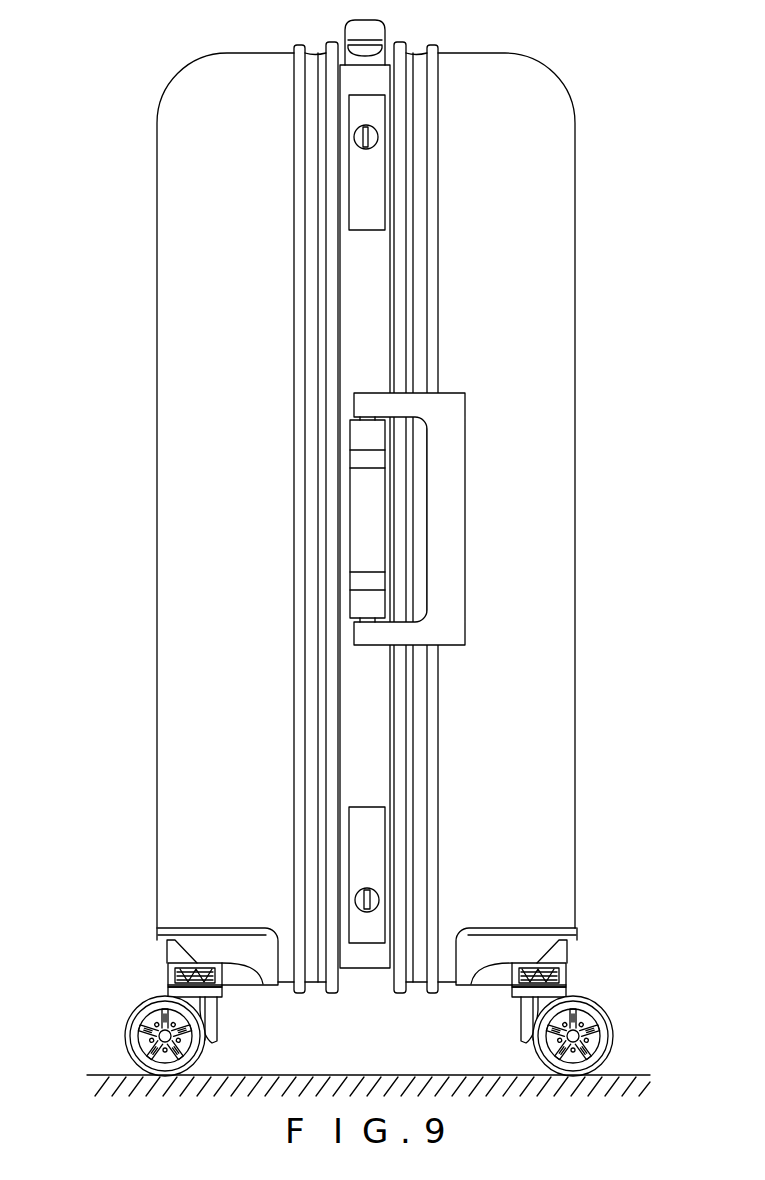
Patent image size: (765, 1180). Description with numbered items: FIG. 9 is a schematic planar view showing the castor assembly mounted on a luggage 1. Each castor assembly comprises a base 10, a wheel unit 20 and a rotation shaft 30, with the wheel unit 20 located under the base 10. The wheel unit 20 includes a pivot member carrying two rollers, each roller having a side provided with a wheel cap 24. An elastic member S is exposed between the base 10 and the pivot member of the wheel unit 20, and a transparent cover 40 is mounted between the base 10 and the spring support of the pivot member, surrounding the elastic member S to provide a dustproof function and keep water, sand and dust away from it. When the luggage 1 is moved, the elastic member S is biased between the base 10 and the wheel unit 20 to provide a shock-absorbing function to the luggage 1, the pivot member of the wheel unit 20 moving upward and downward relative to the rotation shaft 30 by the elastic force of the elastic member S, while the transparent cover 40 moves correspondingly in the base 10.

The luggage 1 is at (173, 430).
The base 10 is at (167, 942).
The wheel unit 20 is at (207, 1017).
The wheel cap 24 is at (150, 1033).
The rotation shaft 30 is at (193, 977).
The transparent cover 40 is at (180, 978).
The elastic member S is at (215, 980).